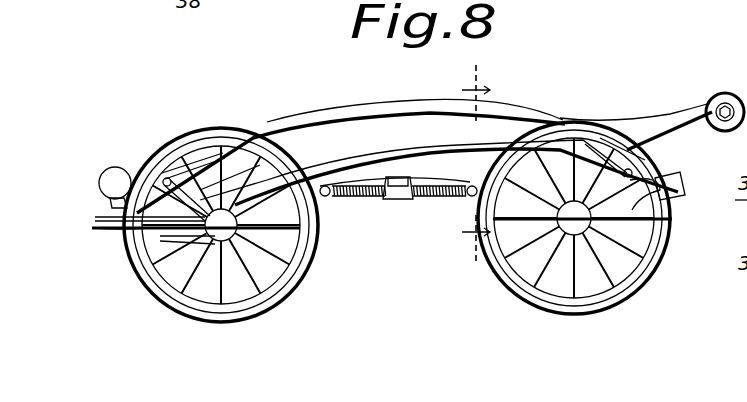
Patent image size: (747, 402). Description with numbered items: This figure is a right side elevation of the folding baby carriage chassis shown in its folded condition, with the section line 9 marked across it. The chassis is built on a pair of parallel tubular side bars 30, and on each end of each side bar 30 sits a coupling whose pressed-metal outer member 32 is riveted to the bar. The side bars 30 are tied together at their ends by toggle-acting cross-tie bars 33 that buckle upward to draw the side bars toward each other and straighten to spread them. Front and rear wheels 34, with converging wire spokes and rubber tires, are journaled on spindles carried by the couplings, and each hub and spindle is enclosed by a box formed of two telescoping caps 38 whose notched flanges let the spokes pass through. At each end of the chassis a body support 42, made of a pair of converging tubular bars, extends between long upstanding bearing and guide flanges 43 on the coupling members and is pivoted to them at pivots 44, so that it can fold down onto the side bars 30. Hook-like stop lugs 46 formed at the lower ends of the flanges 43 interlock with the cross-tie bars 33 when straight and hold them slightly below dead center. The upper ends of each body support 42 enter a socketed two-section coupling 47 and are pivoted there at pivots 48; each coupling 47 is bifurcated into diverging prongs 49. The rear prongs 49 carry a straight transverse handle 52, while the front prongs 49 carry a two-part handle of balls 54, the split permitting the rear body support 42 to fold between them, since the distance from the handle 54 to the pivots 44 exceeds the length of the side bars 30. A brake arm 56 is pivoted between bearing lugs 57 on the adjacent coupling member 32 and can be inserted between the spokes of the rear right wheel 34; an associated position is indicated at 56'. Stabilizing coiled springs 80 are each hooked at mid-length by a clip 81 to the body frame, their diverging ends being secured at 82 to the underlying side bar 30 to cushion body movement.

The section line 9- 9 is at (475, 160).
The side bar 30 is at (433, 182).
The outer coupling member 32 is at (737, 211).
The cross-tie bar 33 is at (160, 238).
The wheel 34 is at (312, 263).
The cap 38 is at (230, 226).
The body support 42 is at (405, 127).
The bearing and guide flange 43 is at (203, 148).
The pivot 44 is at (637, 160).
The stop lug 46 is at (175, 248).
The coupling 47 is at (250, 157).
The pivot 48 is at (240, 152).
The prong 49 is at (667, 122).
The handle 52 is at (733, 74).
The ball 54 is at (112, 183).
The brake arm 56 is at (79, 237).
The lower bar 56' is at (120, 214).
The bearing lug 57 is at (183, 165).
The coiled spring 80 is at (437, 197).
The clip 81 is at (398, 200).
The spring end securement 82 is at (328, 196).